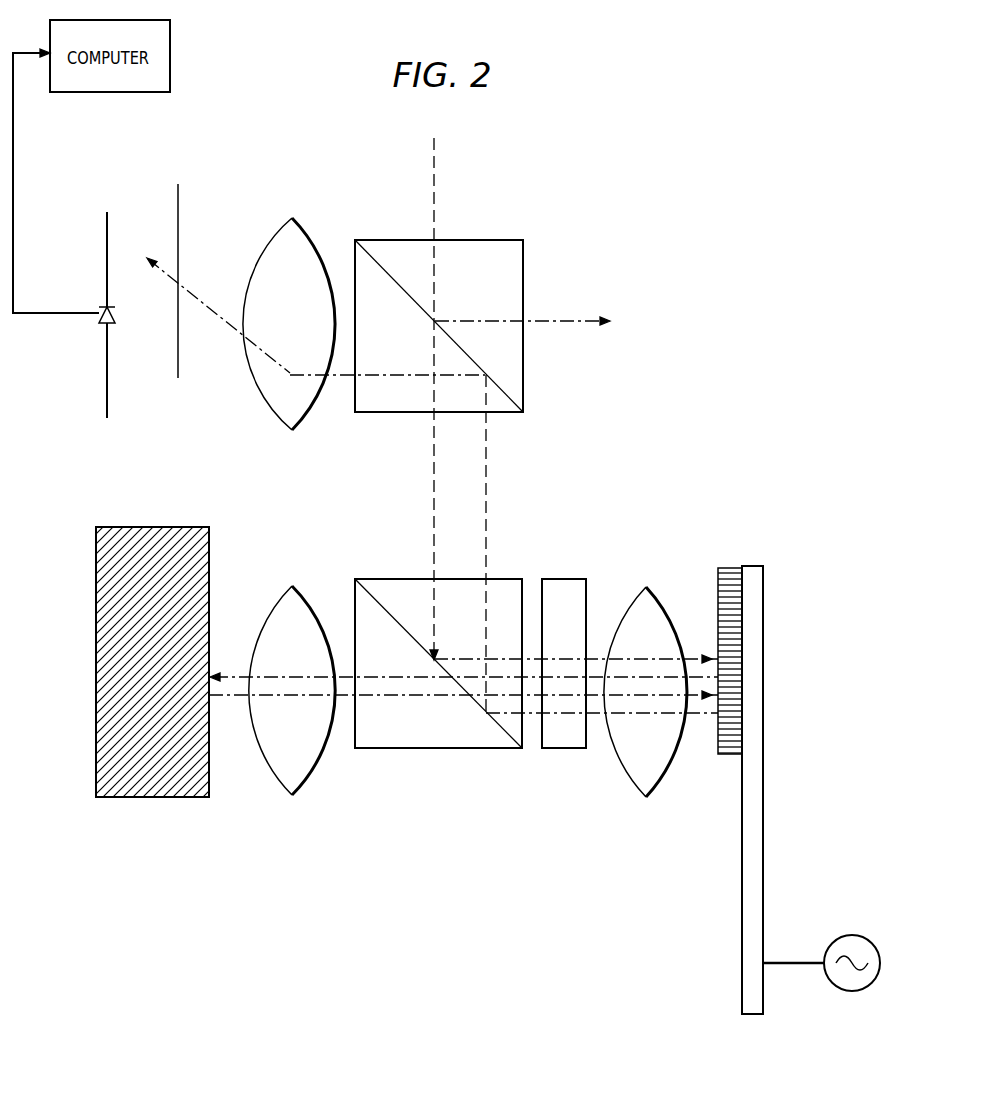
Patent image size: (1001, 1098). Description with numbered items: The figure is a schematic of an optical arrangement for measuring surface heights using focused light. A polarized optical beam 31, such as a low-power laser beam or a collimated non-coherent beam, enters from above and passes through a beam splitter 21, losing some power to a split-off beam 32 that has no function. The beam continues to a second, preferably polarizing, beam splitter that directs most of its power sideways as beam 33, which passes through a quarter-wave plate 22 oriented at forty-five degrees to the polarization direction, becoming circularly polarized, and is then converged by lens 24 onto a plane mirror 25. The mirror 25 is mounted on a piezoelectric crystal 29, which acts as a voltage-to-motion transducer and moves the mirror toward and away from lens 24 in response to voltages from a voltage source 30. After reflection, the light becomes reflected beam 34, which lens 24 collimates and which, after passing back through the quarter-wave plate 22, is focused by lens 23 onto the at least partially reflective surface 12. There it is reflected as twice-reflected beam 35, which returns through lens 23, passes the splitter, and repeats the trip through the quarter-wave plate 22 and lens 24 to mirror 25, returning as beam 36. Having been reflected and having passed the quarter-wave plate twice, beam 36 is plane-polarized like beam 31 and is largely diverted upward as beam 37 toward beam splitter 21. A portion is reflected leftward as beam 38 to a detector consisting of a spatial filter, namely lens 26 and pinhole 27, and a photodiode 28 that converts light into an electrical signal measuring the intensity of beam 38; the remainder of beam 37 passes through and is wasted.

The surface 12 is at (172, 527).
The beam splitter 21 is at (523, 262).
The quarter-wave plate 22 is at (560, 579).
The lens 23 is at (300, 596).
The lens 24 is at (657, 598).
The mirror 25 is at (718, 575).
The lens 26 is at (300, 228).
The pinhole 27 is at (190, 277).
The photodiode 28 is at (100, 307).
The piezoelectric crystal 29 is at (763, 772).
The voltage source 30 is at (848, 935).
The polarized optical beam 31 is at (435, 183).
The split-off beam 32 is at (572, 321).
The beam 33 is at (552, 657).
The reflected beam 34 is at (243, 670).
The twice-reflected beam 35 is at (228, 700).
The beam 36 is at (700, 716).
The beam 37 is at (486, 443).
The beam 38 is at (336, 378).